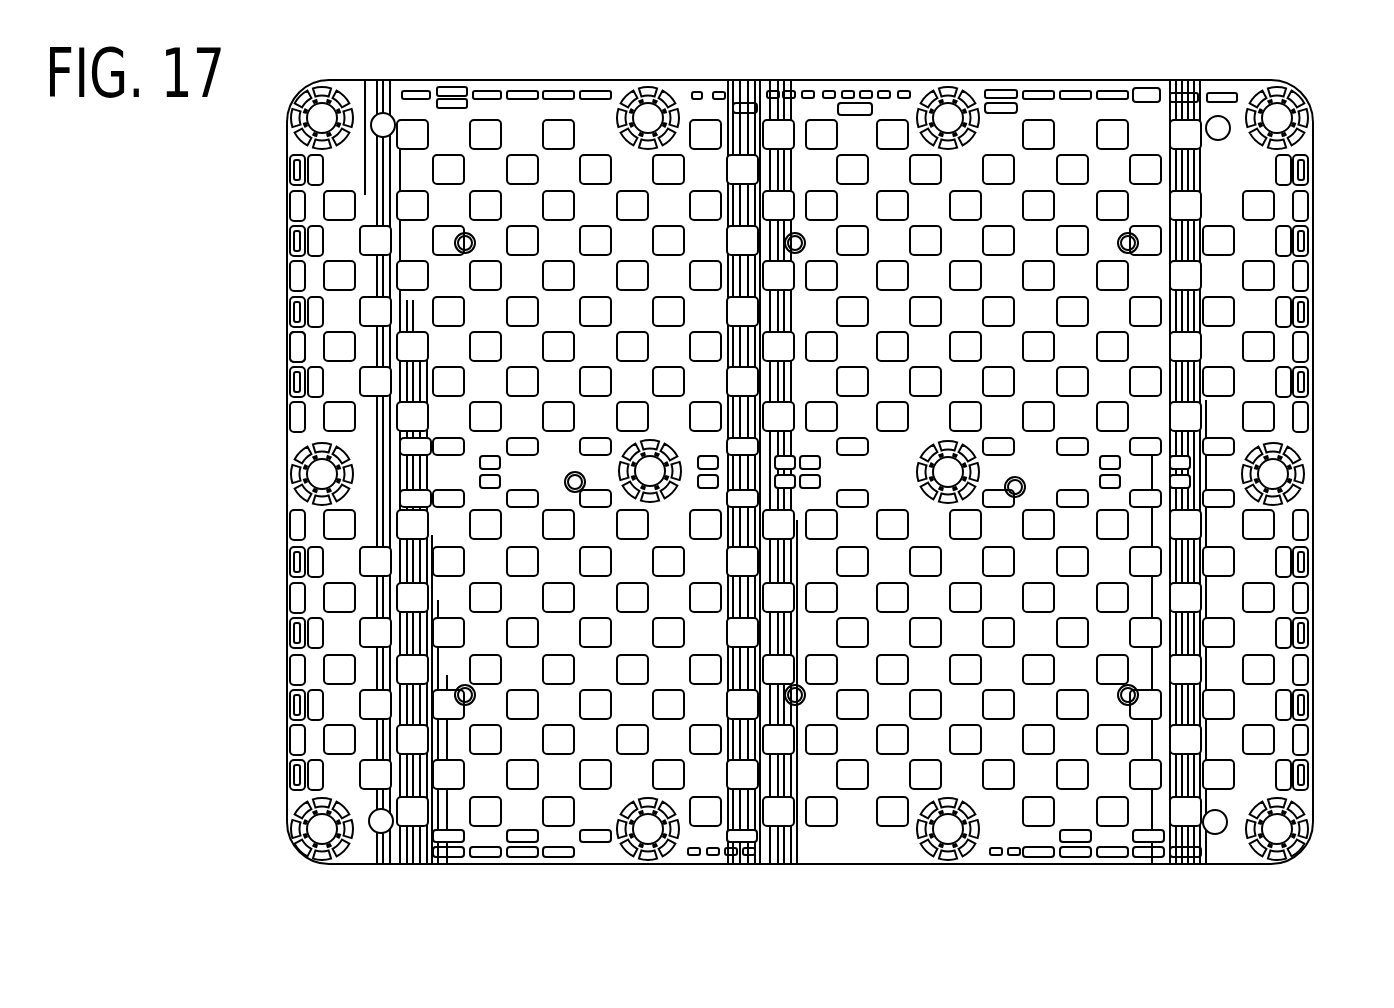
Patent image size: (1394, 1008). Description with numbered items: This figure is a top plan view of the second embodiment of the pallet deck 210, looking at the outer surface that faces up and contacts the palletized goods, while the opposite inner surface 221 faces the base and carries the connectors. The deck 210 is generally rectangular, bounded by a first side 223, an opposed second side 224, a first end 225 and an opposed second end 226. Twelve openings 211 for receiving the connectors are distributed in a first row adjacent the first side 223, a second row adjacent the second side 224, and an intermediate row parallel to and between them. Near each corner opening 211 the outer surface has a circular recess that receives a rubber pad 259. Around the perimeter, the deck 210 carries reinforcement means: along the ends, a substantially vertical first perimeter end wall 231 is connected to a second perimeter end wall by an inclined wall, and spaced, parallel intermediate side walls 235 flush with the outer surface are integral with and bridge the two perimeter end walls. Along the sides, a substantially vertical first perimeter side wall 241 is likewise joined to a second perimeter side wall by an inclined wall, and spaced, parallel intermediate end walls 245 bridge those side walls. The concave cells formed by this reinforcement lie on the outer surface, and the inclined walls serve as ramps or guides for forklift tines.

The deck 210 is at (612, 60).
The openings 211 is at (323, 116).
The inner surface 221 is at (793, 116).
The first side 223 is at (926, 62).
The second side 224 is at (792, 866).
The first end 225 is at (268, 532).
The second end 226 is at (1375, 422).
The first perimeter end wall 231 is at (294, 313).
The intermediate side walls 235 is at (294, 333).
The first perimeter side wall 241 is at (530, 853).
The intermediate end walls 245 is at (462, 858).
The rubber pads 259 is at (383, 122).